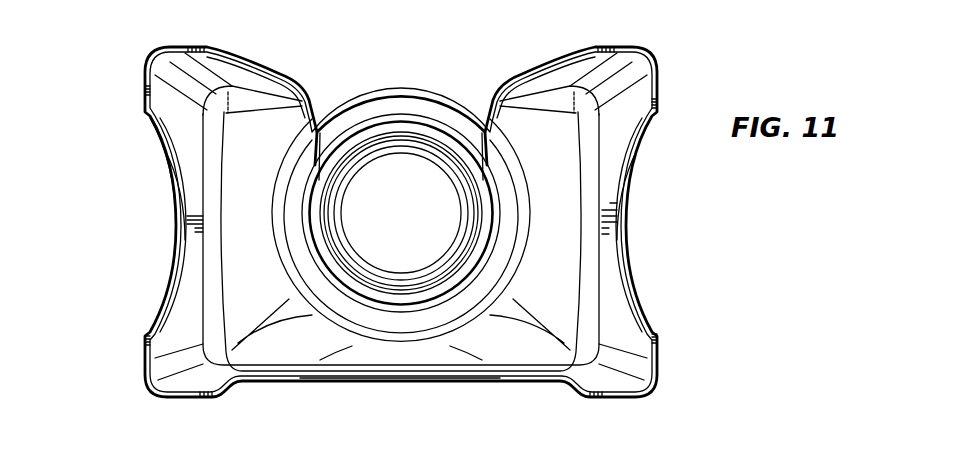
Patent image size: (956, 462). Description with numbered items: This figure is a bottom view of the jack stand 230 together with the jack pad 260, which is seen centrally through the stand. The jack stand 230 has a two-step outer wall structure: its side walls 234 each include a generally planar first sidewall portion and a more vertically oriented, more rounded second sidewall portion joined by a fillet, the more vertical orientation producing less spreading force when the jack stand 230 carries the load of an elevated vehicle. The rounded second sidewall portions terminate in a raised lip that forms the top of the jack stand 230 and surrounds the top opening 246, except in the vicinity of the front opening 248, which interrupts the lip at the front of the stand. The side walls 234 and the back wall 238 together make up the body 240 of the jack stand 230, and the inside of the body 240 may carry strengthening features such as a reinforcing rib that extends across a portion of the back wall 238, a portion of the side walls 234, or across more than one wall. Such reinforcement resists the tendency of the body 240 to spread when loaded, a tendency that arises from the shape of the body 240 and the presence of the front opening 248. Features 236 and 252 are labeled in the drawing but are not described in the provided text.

The jack stand 230 is at (668, 50).
The side walls 234 is at (191, 297).
The upper corner lobe 236 is at (214, 70).
The back wall 238 is at (232, 388).
The body 240 is at (138, 231).
The top opening 246 is at (493, 199).
The front opening 248 is at (488, 122).
The peripheral rim 252 is at (174, 173).
The jack pad 260 is at (430, 223).